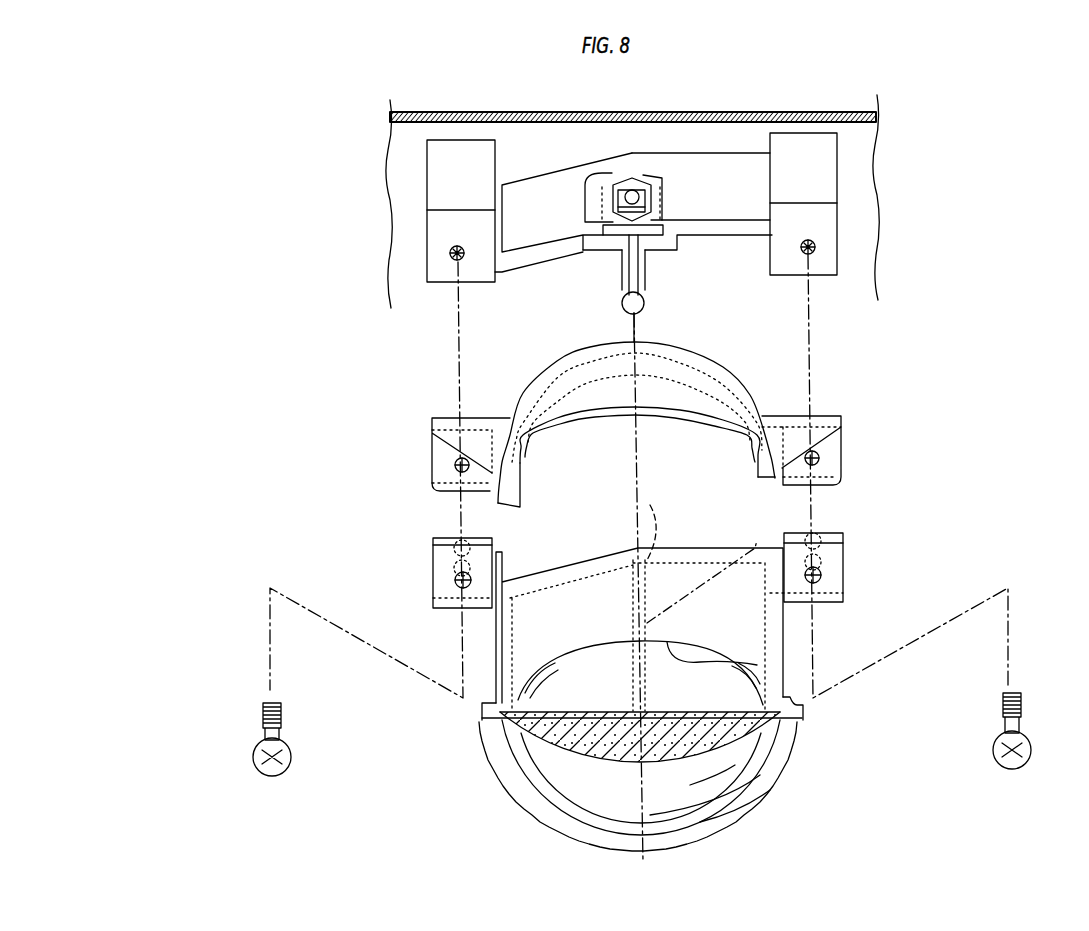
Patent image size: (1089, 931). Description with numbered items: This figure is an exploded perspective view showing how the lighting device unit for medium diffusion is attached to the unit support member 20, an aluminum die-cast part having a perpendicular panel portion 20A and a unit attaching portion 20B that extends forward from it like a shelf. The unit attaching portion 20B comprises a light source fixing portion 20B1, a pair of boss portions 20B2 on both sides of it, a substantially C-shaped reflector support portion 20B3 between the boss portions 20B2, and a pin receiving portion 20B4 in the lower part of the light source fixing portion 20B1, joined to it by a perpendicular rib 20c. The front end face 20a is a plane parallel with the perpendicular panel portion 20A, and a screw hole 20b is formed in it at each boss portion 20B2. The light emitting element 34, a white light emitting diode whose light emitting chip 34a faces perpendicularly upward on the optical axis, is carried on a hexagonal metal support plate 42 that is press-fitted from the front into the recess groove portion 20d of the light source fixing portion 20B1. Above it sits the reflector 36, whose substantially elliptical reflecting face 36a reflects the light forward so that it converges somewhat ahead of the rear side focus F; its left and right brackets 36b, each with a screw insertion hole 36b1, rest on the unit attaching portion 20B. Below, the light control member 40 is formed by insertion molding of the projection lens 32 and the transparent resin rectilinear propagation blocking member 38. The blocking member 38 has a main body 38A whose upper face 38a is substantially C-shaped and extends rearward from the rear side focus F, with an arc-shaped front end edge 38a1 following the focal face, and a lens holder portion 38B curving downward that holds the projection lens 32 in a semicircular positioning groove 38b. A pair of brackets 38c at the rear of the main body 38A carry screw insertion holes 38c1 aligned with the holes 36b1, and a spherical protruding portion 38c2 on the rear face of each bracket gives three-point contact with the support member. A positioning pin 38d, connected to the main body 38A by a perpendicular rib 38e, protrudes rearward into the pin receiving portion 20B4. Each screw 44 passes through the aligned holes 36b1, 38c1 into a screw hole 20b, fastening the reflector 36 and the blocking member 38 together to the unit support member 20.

The unit support member 20 is at (897, 143).
The perpendicular panel portion 20A is at (617, 207).
The unit attaching portion 20B is at (682, 209).
The light source fixing portion 20B1 is at (583, 190).
The boss portions 20B2 is at (448, 185).
The reflector support portion 20B3 is at (730, 168).
The pin receiving portion 20B4 is at (644, 306).
The front end face 20a is at (723, 227).
The screw hole 20b is at (456, 262).
The perpendicular rib 20c is at (620, 277).
The recess groove portion 20d is at (613, 232).
The light emitting element 34 is at (649, 150).
The light emitting chip 34a is at (625, 193).
The support plate 42 is at (642, 230).
The reflector 36 is at (635, 425).
The reflecting face 36a is at (523, 480).
The brackets 36b is at (589, 462).
The screw insertion hole 36b1 is at (452, 463).
The light control member 40 is at (648, 680).
The rectilinear propagation blocking member 38 is at (648, 680).
The main body 38A is at (627, 614).
The lens holder portion 38B is at (679, 786).
The upper face 38a is at (681, 608).
The front end edge 38a1 is at (770, 650).
The positioning groove 38b is at (503, 740).
The brackets 38c is at (593, 570).
The screw insertion hole 38c1 is at (455, 582).
The spherical protruding portion 38c2 is at (470, 538).
The positioning pin 38d is at (713, 569).
The perpendicular rib 38e is at (670, 529).
The rear side focus F is at (634, 638).
The projection lens 32 is at (733, 798).
The screw 44 is at (260, 766).